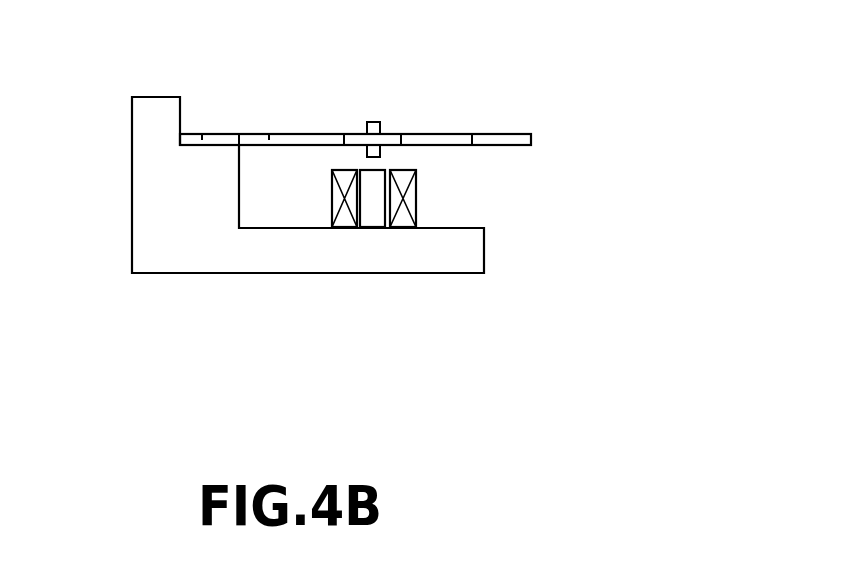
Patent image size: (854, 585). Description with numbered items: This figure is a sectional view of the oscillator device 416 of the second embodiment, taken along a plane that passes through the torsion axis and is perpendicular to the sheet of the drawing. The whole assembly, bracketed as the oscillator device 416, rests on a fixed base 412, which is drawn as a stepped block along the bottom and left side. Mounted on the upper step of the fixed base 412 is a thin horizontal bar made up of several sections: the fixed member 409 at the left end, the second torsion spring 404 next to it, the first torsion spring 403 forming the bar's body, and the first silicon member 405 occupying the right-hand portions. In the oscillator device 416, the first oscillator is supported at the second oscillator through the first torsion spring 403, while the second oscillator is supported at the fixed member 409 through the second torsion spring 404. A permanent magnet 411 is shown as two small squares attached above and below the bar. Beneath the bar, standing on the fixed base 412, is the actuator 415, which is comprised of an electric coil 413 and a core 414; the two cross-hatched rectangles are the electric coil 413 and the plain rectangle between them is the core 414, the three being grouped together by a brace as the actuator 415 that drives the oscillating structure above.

The first torsion spring 403 is at (455, 141).
The second torsion spring 404 is at (269, 135).
The first silicon member 405 is at (401, 134).
The fixed member 409 is at (202, 135).
The permanent magnet 411 is at (375, 150).
The fixed base 412 is at (473, 263).
The electric coil 413 is at (343, 222).
The core 414 is at (375, 222).
The actuator 415 is at (288, 358).
The oscillator device 416 is at (102, 13).